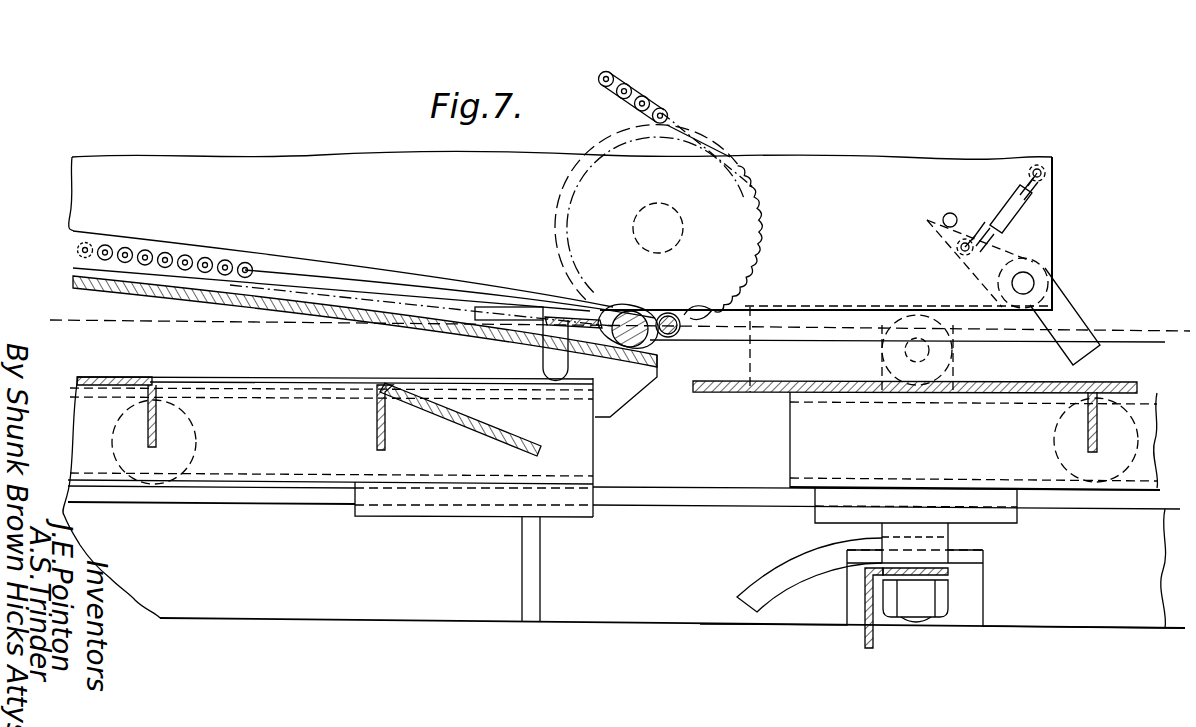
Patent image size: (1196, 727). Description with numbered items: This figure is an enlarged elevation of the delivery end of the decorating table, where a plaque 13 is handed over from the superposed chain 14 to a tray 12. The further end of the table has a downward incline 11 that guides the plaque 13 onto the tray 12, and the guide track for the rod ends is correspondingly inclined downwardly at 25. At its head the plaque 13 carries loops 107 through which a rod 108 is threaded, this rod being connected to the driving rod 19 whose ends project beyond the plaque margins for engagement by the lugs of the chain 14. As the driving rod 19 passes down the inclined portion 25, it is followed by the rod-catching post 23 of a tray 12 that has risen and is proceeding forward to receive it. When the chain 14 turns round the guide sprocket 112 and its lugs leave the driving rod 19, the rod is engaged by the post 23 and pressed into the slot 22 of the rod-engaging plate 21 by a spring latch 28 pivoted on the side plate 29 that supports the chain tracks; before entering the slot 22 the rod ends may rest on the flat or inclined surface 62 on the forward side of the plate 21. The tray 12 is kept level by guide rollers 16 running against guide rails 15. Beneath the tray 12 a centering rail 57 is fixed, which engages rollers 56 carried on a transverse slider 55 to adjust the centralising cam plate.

The downward incline 11 is at (300, 318).
The tray 12 is at (285, 378).
The plaque 13 is at (337, 304).
The superposed chain 14 is at (171, 255).
The guide rail 15 is at (243, 497).
The guide roller 16 is at (199, 446).
The driving rod 19 is at (703, 314).
The rod-engaging plate 21 is at (510, 307).
The slot 22 is at (557, 360).
The rod-catching post 23 is at (549, 316).
The inclined portion of guide track 25 is at (250, 287).
The spring latch 28 is at (1058, 318).
The side plate 29 is at (930, 167).
The transverse slider 55 is at (877, 628).
The roller 56 is at (1006, 507).
The centering rail 57 is at (568, 510).
The inclined surface 62 is at (653, 383).
The loop 107 is at (611, 317).
The rod 108 is at (662, 313).
The guide sprocket 112 is at (758, 222).